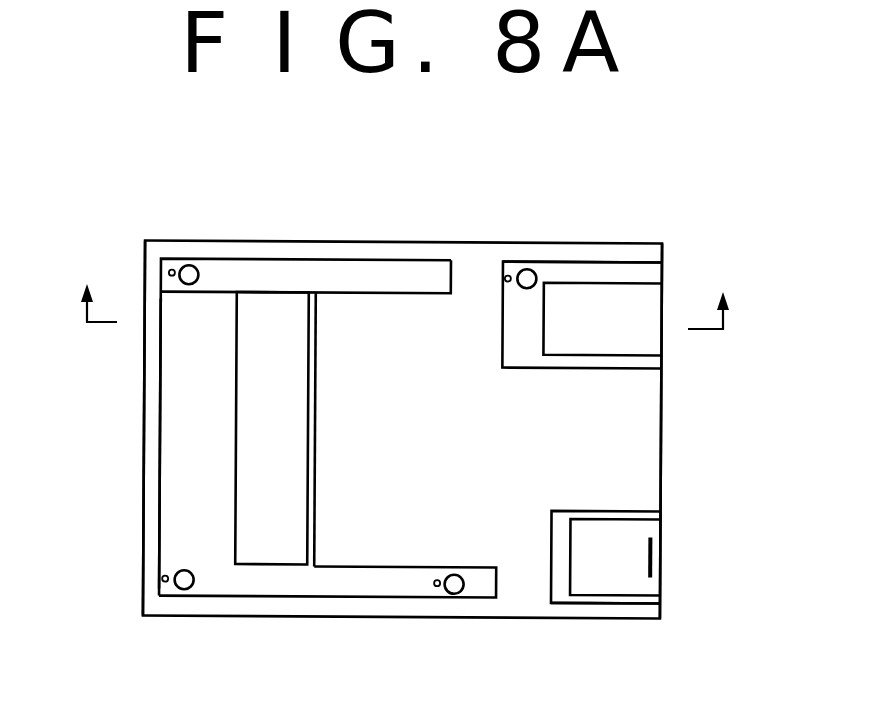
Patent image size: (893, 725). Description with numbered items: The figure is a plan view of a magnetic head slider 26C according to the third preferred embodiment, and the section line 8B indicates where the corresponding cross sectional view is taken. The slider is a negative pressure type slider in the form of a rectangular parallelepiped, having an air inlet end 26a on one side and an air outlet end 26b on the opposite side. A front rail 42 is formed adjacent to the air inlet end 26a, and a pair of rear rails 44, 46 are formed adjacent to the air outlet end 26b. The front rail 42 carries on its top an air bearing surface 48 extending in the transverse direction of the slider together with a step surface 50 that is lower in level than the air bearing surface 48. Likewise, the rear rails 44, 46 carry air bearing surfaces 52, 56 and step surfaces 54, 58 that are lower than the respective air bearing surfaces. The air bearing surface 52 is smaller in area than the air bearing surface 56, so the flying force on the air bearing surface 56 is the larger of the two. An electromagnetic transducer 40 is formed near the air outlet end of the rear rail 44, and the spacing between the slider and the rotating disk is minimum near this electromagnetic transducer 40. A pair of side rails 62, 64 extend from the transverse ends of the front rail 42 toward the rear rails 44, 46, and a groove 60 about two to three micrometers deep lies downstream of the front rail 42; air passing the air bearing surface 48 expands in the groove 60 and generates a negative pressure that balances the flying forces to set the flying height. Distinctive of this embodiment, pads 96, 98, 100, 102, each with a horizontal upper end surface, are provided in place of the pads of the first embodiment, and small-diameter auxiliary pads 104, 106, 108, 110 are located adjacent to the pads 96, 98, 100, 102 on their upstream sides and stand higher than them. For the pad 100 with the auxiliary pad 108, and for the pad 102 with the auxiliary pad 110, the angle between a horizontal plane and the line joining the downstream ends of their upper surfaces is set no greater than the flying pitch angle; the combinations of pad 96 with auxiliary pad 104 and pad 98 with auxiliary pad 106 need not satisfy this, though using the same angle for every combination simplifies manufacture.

The magnetic head slider 26C is at (419, 238).
The air inlet end 26a is at (145, 390).
The air outlet end 26b is at (661, 430).
The electromagnetic transducer 40 is at (654, 556).
The front rail 42 is at (159, 452).
The rear rail 44 is at (607, 603).
The rear rail 46 is at (593, 262).
The air bearing surface 48 is at (266, 306).
The step surface 50 is at (175, 488).
The air bearing surface 52 is at (603, 524).
The step surface 54 is at (559, 551).
The air bearing surface 56 is at (593, 335).
The step surface 58 is at (514, 325).
The groove 60 is at (426, 442).
The side rail 62 is at (342, 600).
The side rail 64 is at (363, 263).
The pad 96 is at (189, 592).
The pad 98 is at (189, 266).
The pad 100 is at (529, 268).
The pad 102 is at (455, 598).
The auxiliary pad 104 is at (162, 580).
The auxiliary pad 106 is at (168, 274).
The auxiliary pad 108 is at (504, 278).
The auxiliary pad 110 is at (436, 580).
The section line 8B— 8B is at (401, 289).